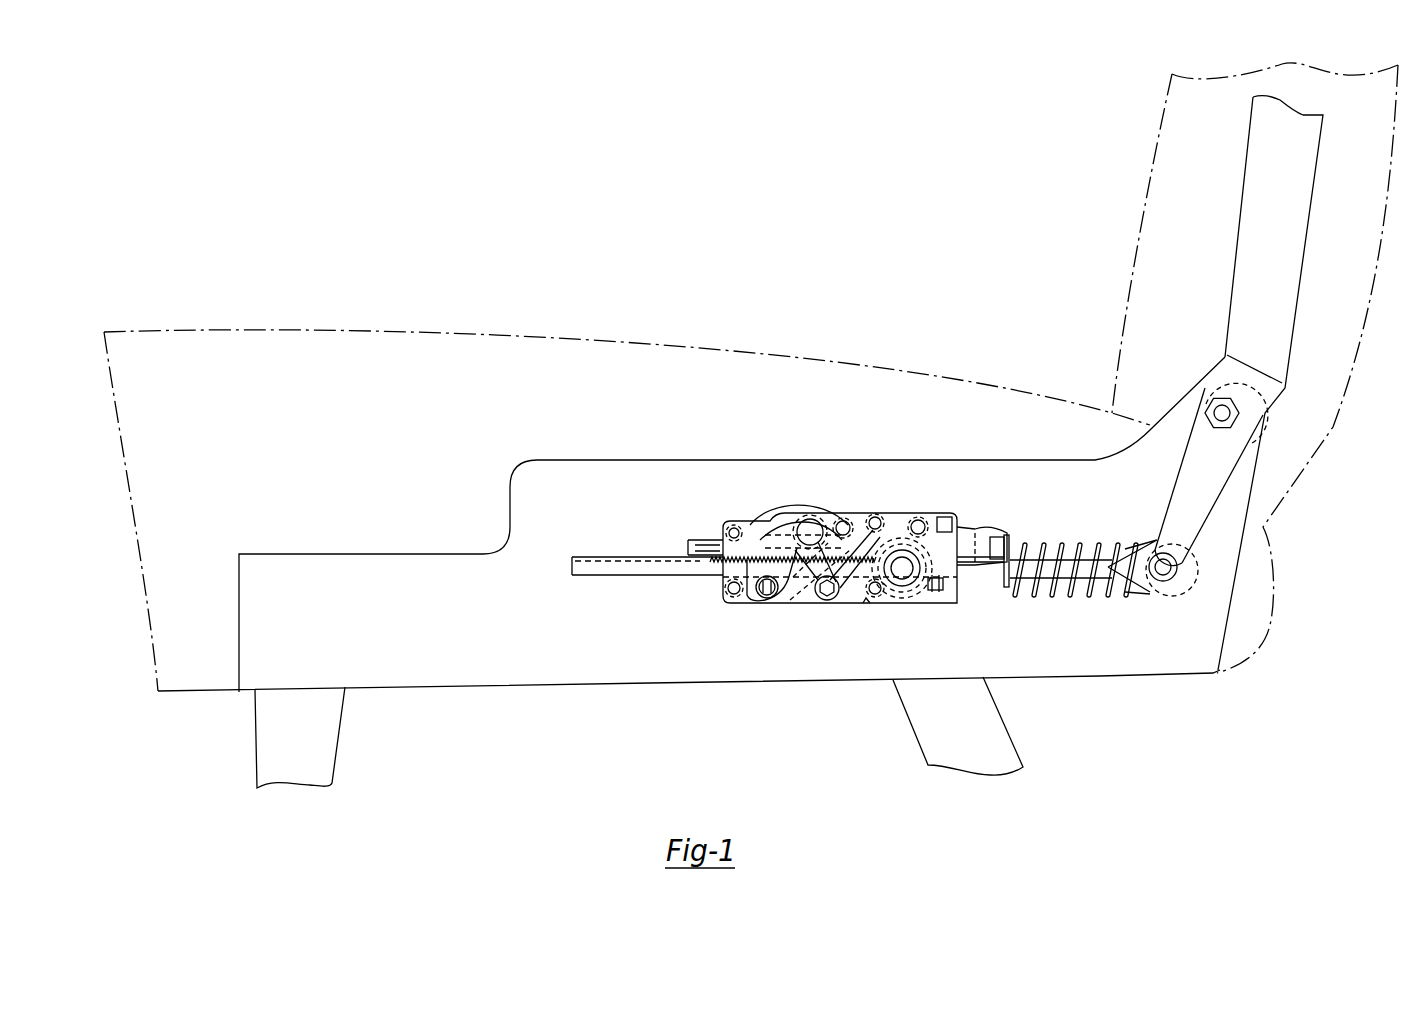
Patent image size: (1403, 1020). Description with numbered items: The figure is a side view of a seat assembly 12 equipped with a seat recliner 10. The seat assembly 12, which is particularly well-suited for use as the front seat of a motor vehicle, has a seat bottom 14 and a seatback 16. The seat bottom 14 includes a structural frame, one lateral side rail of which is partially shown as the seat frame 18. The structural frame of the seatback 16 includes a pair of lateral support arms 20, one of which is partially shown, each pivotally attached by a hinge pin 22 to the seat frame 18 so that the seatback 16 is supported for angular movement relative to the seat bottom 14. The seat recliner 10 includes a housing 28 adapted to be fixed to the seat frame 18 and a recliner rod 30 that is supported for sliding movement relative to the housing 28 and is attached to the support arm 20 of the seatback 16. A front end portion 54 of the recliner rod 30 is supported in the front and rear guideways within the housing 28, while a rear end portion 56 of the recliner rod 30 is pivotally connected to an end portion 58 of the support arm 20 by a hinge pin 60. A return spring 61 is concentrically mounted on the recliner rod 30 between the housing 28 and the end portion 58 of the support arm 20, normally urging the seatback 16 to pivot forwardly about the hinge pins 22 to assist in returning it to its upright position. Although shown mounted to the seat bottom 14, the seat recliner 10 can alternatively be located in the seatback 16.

The seat recliner 10 is at (938, 505).
The seat assembly 12 is at (806, 252).
The seat bottom 14 is at (705, 363).
The seatback 16 is at (1158, 183).
The seat frame 18 is at (557, 477).
The support arm 20 is at (1243, 280).
The hinge pin 22 is at (1227, 416).
The housing 28 is at (798, 600).
The recliner rod 30 is at (643, 556).
The front end portion 54 is at (580, 568).
The rear end portion 56 is at (1097, 565).
The end portion 58 is at (1197, 507).
The hinge pin 60 is at (1163, 570).
The return spring 61 is at (1043, 590).